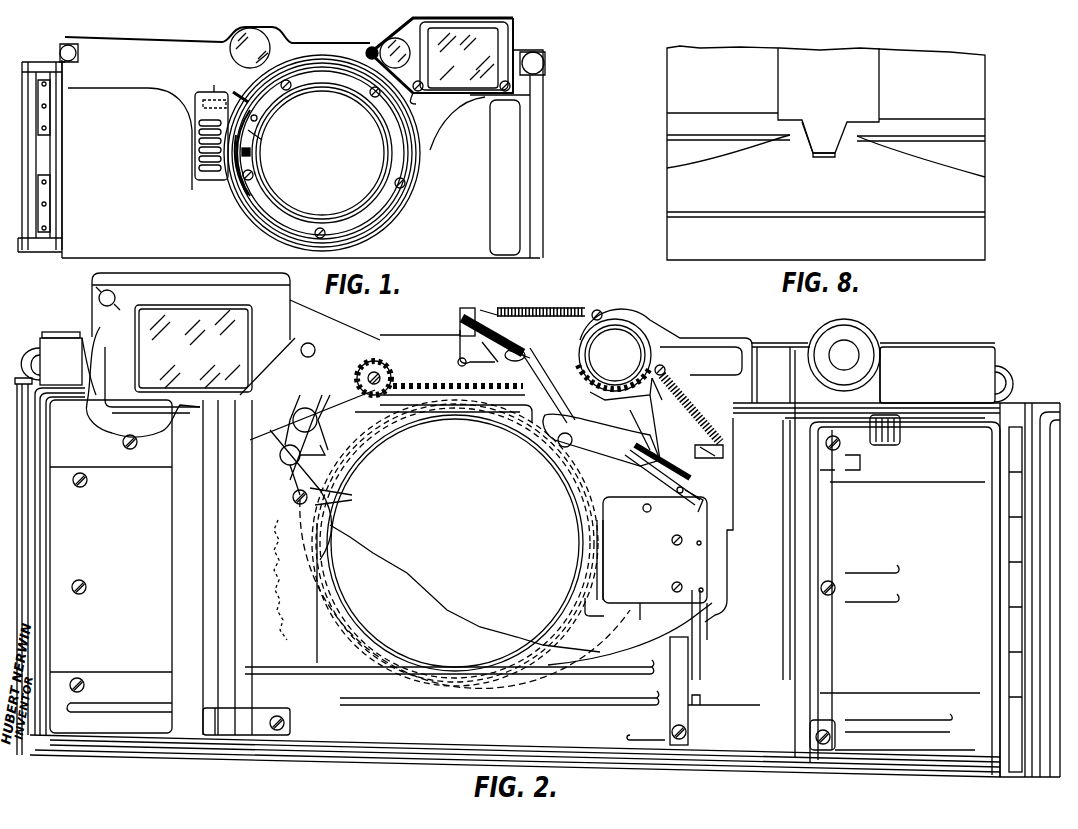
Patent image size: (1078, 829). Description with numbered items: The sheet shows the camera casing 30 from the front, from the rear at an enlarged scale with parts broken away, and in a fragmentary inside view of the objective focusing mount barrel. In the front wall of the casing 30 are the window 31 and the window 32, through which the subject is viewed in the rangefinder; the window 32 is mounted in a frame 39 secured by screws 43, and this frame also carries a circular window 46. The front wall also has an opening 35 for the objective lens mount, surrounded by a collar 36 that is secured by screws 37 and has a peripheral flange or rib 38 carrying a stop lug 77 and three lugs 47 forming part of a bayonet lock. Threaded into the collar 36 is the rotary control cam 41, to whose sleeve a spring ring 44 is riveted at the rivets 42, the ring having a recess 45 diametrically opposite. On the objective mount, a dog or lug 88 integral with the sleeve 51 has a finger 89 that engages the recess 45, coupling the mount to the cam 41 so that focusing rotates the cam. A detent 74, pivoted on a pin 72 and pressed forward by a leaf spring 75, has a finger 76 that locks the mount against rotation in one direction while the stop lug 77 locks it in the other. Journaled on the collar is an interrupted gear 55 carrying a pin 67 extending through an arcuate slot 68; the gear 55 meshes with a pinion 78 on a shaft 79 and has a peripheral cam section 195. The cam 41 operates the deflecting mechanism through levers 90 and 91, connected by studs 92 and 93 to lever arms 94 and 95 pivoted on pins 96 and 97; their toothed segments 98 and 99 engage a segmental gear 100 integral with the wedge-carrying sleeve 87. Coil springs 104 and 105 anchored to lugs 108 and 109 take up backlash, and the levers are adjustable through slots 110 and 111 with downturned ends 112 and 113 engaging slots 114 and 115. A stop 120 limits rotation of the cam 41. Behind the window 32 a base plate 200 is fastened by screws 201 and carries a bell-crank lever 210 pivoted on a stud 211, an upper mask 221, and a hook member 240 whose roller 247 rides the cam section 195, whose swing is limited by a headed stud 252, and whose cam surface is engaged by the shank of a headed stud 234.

In FIG. 1, the camera casing 30 is at (437, 258).
In FIG. 2, the camera casing 30 is at (915, 770).
In FIG. 1, the window 31 is at (272, 40).
In FIG. 1, the window 32 is at (513, 40).
In FIG. 1, the opening 35 is at (382, 148).
In FIG. 1, the collar 36 is at (392, 205).
In FIG. 1, the screws 37 is at (406, 183).
In FIG. 1, the peripheral flange or rib 38 is at (378, 230).
In FIG. 1, the frame 39 is at (375, 30).
In FIG. 2, the rotary control cam 41 is at (612, 630).
In FIG. 1, the rivets 42 is at (256, 120).
In FIG. 2, the rivets 42 is at (545, 470).
In FIG. 1, the screws 43 is at (411, 77).
In FIG. 1, the spring ring 44 is at (322, 153).
In FIG. 8, the spring ring 44 is at (965, 200).
In FIG. 2, the spring ring 44 is at (357, 470).
In FIG. 8, the recess 45 is at (830, 158).
In FIG. 1, the circular window 46 is at (400, 53).
In FIG. 1, the lugs 47 is at (345, 85).
In FIG. 8, the sleeve 51 is at (975, 92).
In FIG. 2, the interrupted gear 55 is at (448, 386).
In FIG. 1, the pin 67 is at (250, 152).
In FIG. 1, the arcuate slot 68 is at (262, 140).
In FIG. 1, the pin 72 is at (193, 170).
In FIG. 1, the detent 74 is at (195, 118).
In FIG. 1, the leaf spring 75 is at (214, 85).
In FIG. 1, the finger 76 is at (245, 92).
In FIG. 1, the stop lug 77 is at (240, 190).
In FIG. 2, the pinion 78 is at (385, 366).
In FIG. 2, the shaft 79 is at (380, 378).
In FIG. 2, the sleeve 87 is at (645, 340).
In FIG. 8, the dog or lug 88 is at (862, 90).
In FIG. 8, the finger 89 is at (812, 138).
In FIG. 2, the lever 90 is at (593, 440).
In FIG. 2, the lever 91 is at (560, 405).
In FIG. 2, the stud 92 is at (643, 430).
In FIG. 2, the stud 93 is at (525, 352).
In FIG. 2, the lever arm 94 is at (655, 400).
In FIG. 2, the lever arm 95 is at (498, 364).
In FIG. 2, the pin 96 is at (640, 525).
In FIG. 2, the pin 97 is at (455, 348).
In FIG. 2, the toothed segment 98 is at (600, 392).
In FIG. 2, the toothed segment 99 is at (580, 343).
In FIG. 2, the segmental gear 100 is at (590, 400).
In FIG. 2, the coil spring 104 is at (705, 410).
In FIG. 2, the coil spring 105 is at (562, 296).
In FIG. 2, the lug 108 is at (700, 462).
In FIG. 2, the lug 109 is at (487, 308).
In FIG. 2, the slot 110 is at (690, 465).
In FIG. 2, the slot 111 is at (530, 358).
In FIG. 2, the downturned end 112 is at (675, 488).
In FIG. 2, the downturned end 113 is at (440, 335).
In FIG. 2, the slot 114 is at (695, 505).
In FIG. 2, the slot 115 is at (460, 322).
In FIG. 2, the stop 120 is at (653, 603).
In FIG. 2, the peripheral cam section 195 is at (305, 449).
In FIG. 2, the base plate 200 is at (93, 395).
In FIG. 2, the screws 201 is at (80, 335).
In FIG. 2, the bell-crank lever 210 is at (430, 407).
In FIG. 2, the stud 211 is at (315, 350).
In FIG. 2, the upper mask 221 is at (265, 308).
In FIG. 2, the headed stud 234 is at (293, 420).
In FIG. 2, the hook member 240 is at (345, 497).
In FIG. 2, the roller 247 is at (310, 500).
In FIG. 2, the headed stud 252 is at (330, 460).